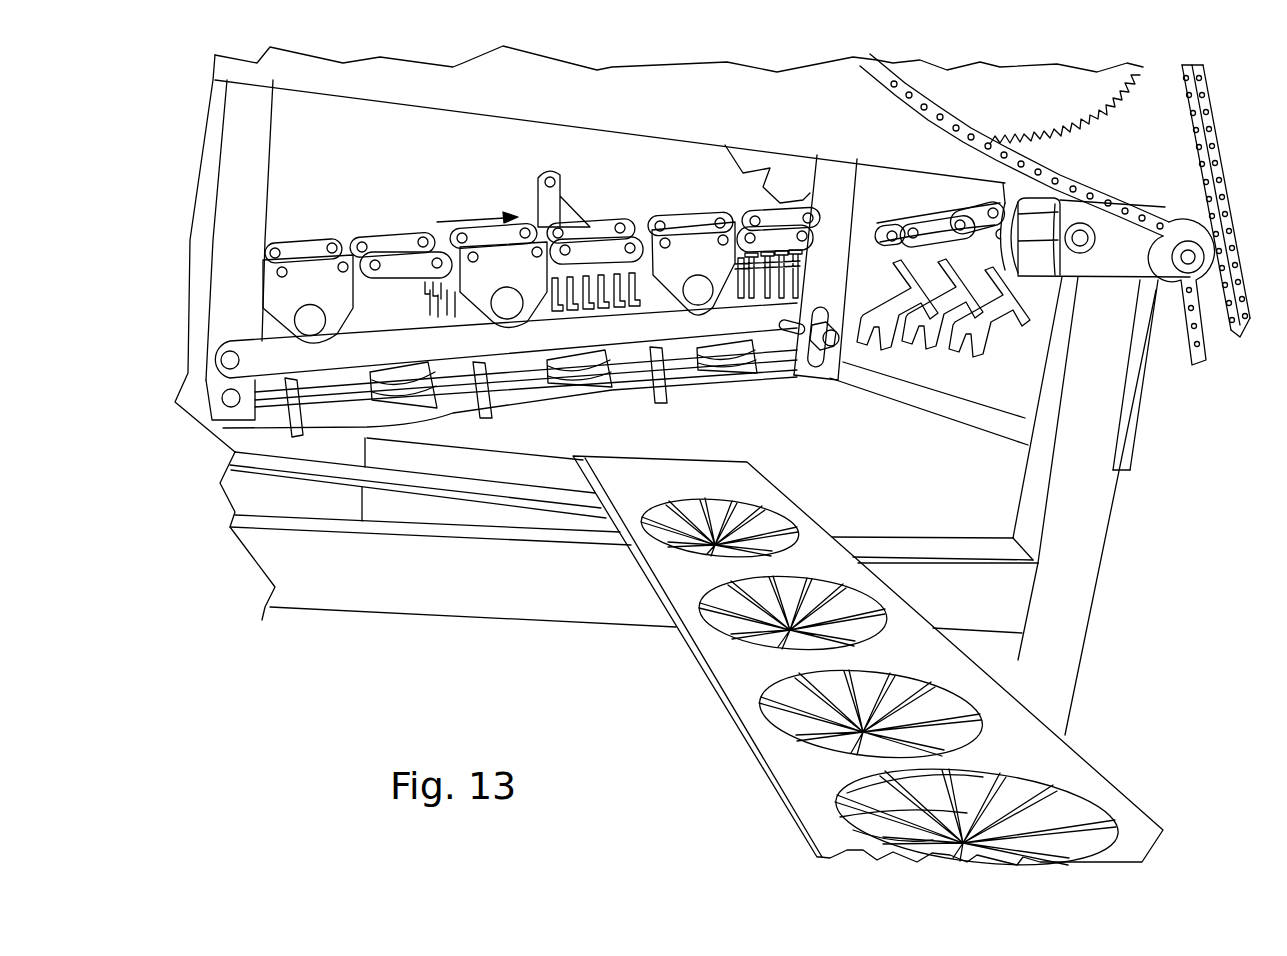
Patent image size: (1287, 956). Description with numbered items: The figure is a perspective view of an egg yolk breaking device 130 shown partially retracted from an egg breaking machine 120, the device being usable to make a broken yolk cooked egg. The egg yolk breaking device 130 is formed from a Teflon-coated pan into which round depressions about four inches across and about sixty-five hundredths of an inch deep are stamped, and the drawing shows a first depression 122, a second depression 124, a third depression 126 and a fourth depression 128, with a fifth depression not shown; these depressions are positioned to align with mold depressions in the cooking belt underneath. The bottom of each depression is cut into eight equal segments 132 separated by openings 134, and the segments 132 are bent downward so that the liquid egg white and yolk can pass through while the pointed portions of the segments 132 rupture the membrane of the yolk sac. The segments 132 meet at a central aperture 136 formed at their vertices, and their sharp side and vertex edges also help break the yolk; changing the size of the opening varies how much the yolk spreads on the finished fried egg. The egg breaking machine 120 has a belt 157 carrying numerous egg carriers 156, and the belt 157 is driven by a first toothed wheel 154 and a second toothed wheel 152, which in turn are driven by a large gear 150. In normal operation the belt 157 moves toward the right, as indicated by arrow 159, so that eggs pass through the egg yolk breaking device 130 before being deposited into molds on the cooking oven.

The egg breaking machine 120 is at (704, 120).
The first depression 122 is at (782, 513).
The second depression 124 is at (893, 621).
The third depression 126 is at (987, 725).
The fourth depression 128 is at (1073, 790).
The egg yolk breaking device 130 is at (627, 466).
The segments 132 is at (923, 780).
The openings 134 is at (915, 847).
The central aperture 136 is at (1033, 820).
The large gear 150 is at (978, 115).
The second toothed wheel 152 is at (898, 205).
The first toothed wheel 154 is at (318, 167).
The egg carriers 156 is at (367, 427).
The belt 157 is at (388, 263).
The arrow 159 is at (513, 199).